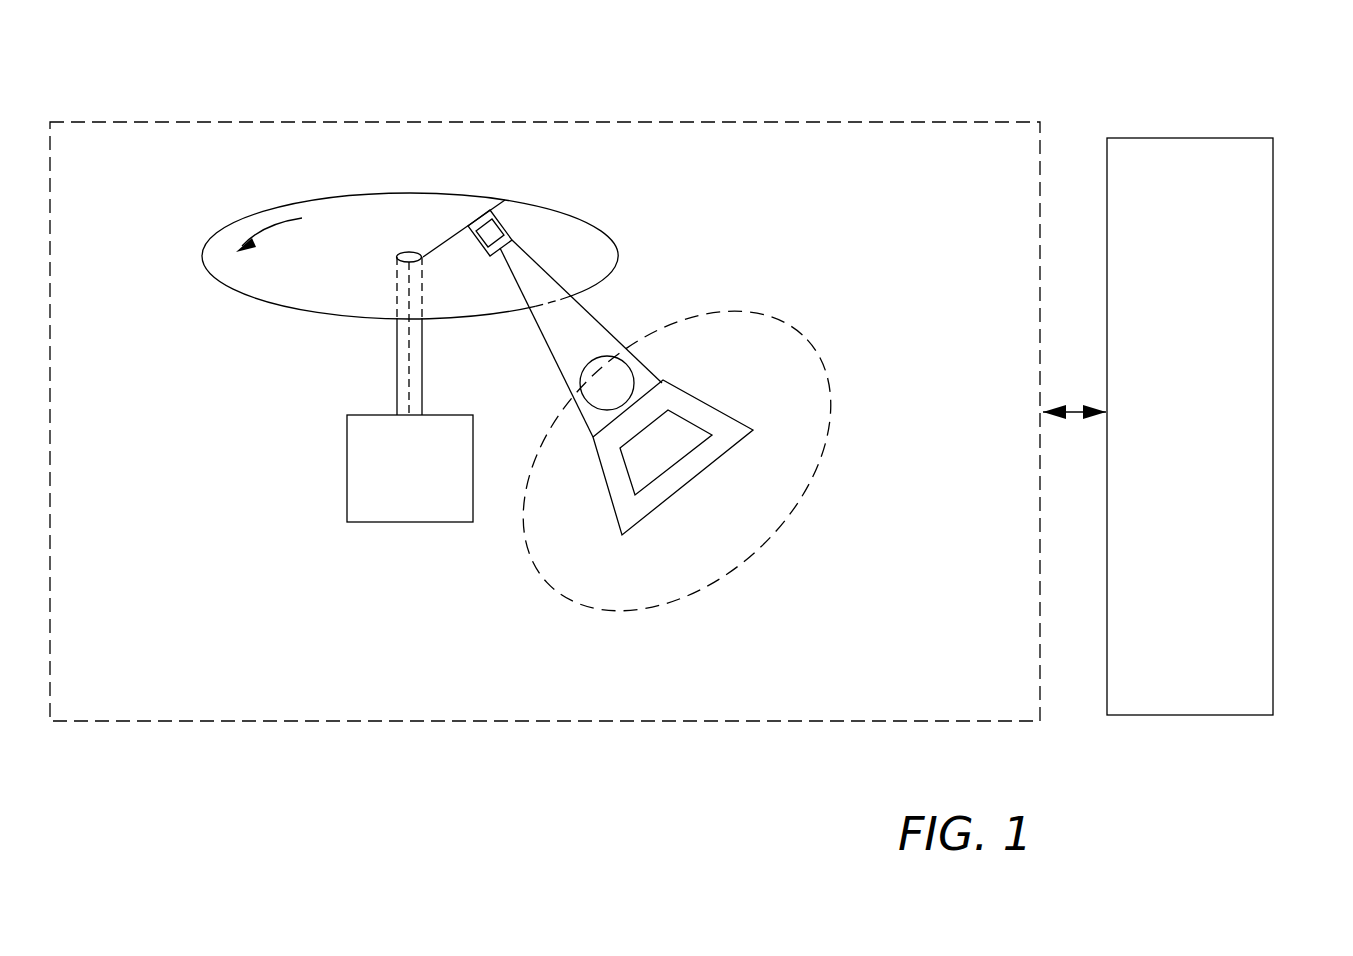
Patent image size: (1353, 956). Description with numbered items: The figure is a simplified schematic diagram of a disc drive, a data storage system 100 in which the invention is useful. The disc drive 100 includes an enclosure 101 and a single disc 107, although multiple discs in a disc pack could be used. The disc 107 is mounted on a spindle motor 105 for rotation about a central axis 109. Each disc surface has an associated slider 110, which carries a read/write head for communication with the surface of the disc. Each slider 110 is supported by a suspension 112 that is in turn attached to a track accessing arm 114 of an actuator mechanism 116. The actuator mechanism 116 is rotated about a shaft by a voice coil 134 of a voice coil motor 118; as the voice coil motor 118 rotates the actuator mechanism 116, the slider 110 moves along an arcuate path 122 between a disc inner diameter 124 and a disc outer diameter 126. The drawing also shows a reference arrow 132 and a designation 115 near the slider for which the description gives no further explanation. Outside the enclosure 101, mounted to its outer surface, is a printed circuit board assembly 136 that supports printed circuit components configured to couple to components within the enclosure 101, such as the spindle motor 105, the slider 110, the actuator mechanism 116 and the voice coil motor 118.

The data storage system 100 is at (1232, 71).
The enclosure 101 is at (648, 722).
The spindle motor 105 is at (358, 497).
The disc 107 is at (225, 267).
The central axis 109 is at (407, 333).
The slider 110 is at (487, 237).
The suspension 112 is at (530, 282).
The track accessing arm 114 is at (572, 328).
The slider 115 is at (487, 243).
The actuator mechanism 116 is at (563, 380).
The voice coil motor 118 is at (622, 600).
The arcuate path 122 is at (437, 247).
The disc inner diameter 124 is at (397, 255).
The disc outer diameter 126 is at (560, 212).
The rotation direction 132 is at (275, 225).
The voice coil 134 is at (627, 497).
The printed circuit board assembly 136 is at (1273, 193).